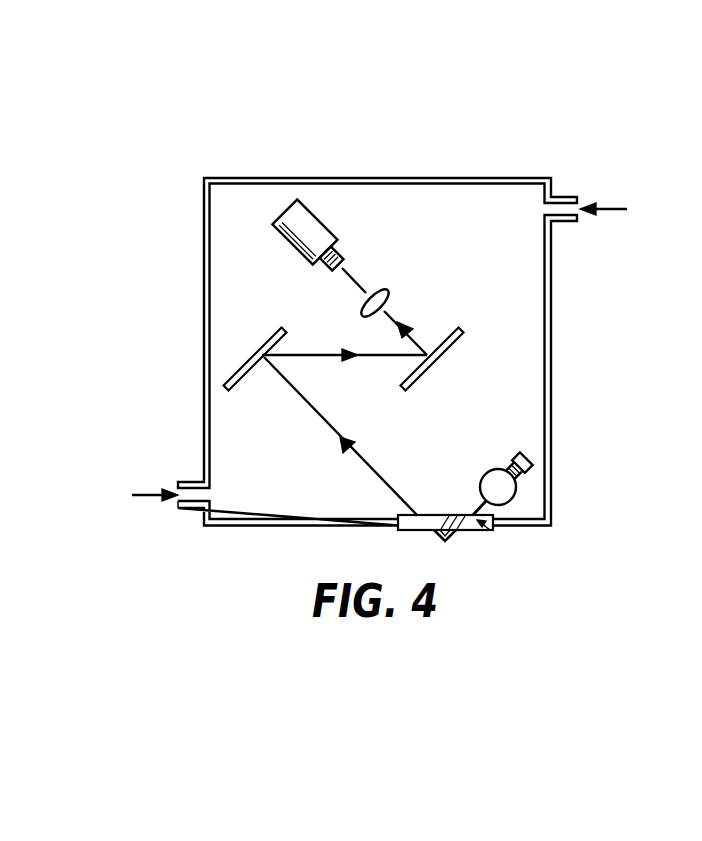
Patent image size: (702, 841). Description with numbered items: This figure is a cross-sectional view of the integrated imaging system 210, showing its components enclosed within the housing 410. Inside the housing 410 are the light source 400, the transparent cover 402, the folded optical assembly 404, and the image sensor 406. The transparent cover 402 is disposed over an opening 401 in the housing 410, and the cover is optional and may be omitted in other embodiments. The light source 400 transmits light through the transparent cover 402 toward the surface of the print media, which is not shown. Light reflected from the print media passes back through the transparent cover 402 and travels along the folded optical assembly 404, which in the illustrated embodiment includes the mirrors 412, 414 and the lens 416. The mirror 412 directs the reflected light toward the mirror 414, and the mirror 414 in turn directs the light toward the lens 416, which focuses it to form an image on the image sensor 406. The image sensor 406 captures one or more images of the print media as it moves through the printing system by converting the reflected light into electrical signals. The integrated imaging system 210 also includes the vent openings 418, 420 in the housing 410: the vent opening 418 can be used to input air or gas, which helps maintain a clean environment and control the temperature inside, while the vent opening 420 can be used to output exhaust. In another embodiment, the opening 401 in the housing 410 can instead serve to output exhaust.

The integrated imaging system 210 is at (221, 129).
The light source 400 is at (494, 471).
The opening 401 is at (491, 532).
The transparent cover 402 is at (418, 531).
The folded optical assembly 404 is at (287, 456).
The image sensor 406 is at (321, 219).
The housing 410 is at (203, 281).
The mirror 412 is at (276, 330).
The mirror 414 is at (455, 338).
The lens 416 is at (378, 286).
The vent opening 418 is at (607, 207).
The vent opening 420 is at (148, 489).